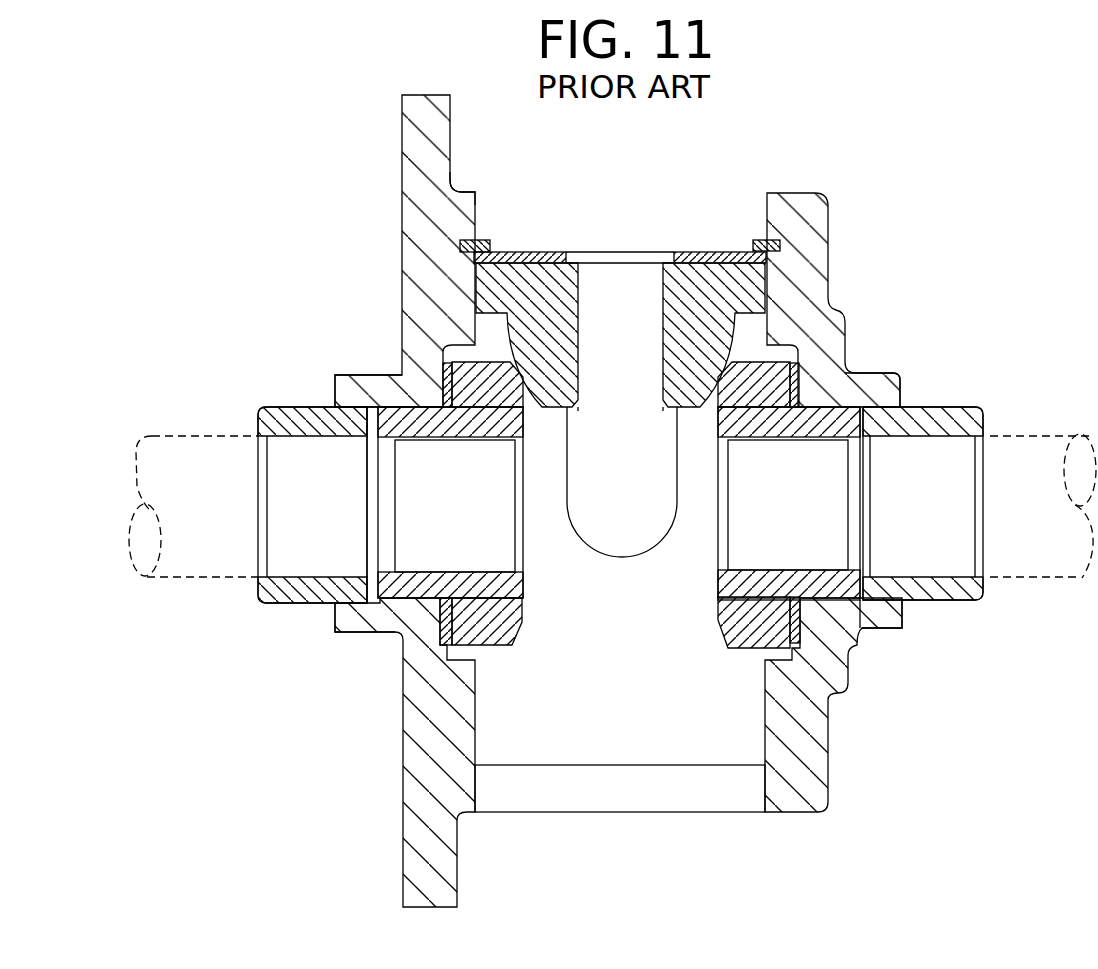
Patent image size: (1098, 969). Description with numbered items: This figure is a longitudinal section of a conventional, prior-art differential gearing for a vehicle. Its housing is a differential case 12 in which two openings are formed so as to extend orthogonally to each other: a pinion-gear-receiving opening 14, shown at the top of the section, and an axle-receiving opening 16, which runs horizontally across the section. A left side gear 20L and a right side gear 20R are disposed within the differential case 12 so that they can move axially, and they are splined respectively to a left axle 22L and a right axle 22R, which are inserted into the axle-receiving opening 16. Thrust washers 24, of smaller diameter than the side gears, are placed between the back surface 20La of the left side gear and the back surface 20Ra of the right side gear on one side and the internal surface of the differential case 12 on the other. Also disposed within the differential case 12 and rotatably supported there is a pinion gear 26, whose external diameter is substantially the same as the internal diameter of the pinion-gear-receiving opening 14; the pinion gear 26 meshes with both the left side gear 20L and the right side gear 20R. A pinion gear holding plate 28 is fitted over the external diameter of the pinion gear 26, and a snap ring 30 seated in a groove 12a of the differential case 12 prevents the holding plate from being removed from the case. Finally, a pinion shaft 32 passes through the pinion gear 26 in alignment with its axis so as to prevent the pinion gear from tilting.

The differential case 12 is at (415, 215).
The pinion-gear-receiving opening 14 is at (478, 208).
The groove 12a is at (486, 239).
The pinion gear holding plate 28 is at (695, 253).
The pinion shaft 32 is at (598, 287).
The snap ring 30 is at (758, 240).
The pinion gear 26 is at (740, 295).
The back surface of left side gear 20La is at (443, 368).
The thrust washer 24 is at (380, 377).
The back surface of right side gear 20Ra is at (800, 367).
The left side gear 20L is at (522, 582).
The right side gear 20R is at (720, 583).
The axle-receiving opening 16 is at (305, 565).
The left axle 22L is at (185, 553).
The right axle 22R is at (1040, 560).